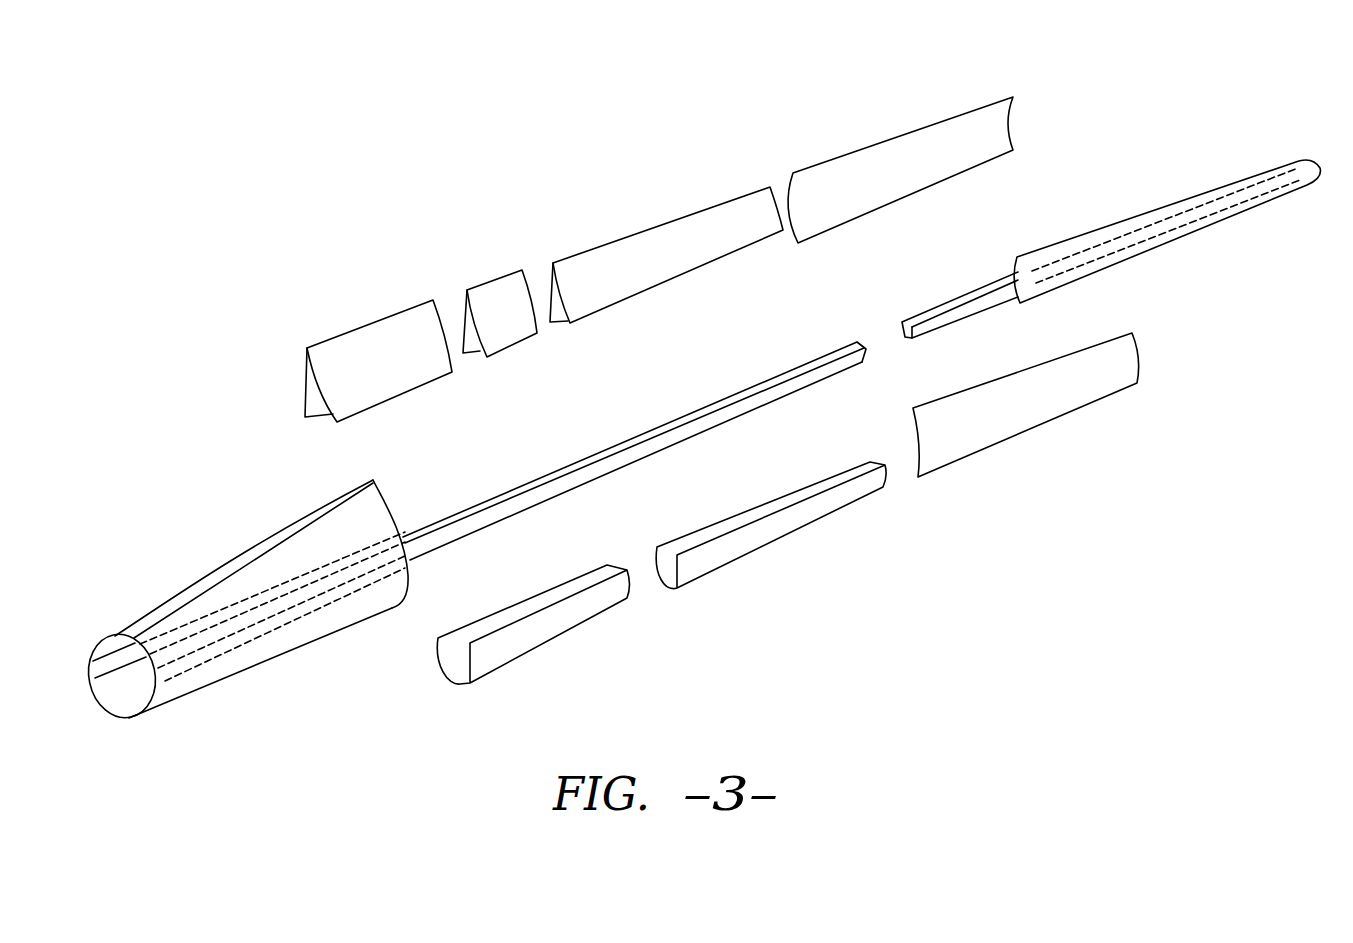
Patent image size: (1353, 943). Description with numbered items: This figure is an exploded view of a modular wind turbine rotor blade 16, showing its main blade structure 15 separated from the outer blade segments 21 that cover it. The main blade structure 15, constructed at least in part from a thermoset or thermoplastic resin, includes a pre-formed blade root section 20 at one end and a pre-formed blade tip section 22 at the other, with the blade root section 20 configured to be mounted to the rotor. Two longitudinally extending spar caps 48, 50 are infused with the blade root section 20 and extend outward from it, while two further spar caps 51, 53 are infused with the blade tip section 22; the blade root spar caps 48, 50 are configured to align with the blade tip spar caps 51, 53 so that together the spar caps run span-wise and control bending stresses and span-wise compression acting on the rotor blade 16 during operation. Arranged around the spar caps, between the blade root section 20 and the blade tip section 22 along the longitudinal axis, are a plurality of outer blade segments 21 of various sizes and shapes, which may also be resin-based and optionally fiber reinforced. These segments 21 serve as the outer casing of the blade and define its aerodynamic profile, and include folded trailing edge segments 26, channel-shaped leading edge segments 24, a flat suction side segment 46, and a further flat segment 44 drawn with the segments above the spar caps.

The rotor blade 16 is at (1073, 113).
The main blade structure 15 is at (238, 544).
The blade root section 20 is at (240, 673).
The spar cap 48 is at (450, 517).
The spar cap 50 is at (620, 458).
The blade tip section 22 is at (1177, 240).
The spar cap 51 is at (900, 320).
The spar cap 53 is at (953, 323).
The outer blade segment 21 is at (336, 326).
The trailing edge segment 26 is at (377, 315).
The vane (flat strip) 44 is at (898, 137).
The suction side segment 46 is at (1033, 428).
The leading edge segment 24 is at (543, 647).